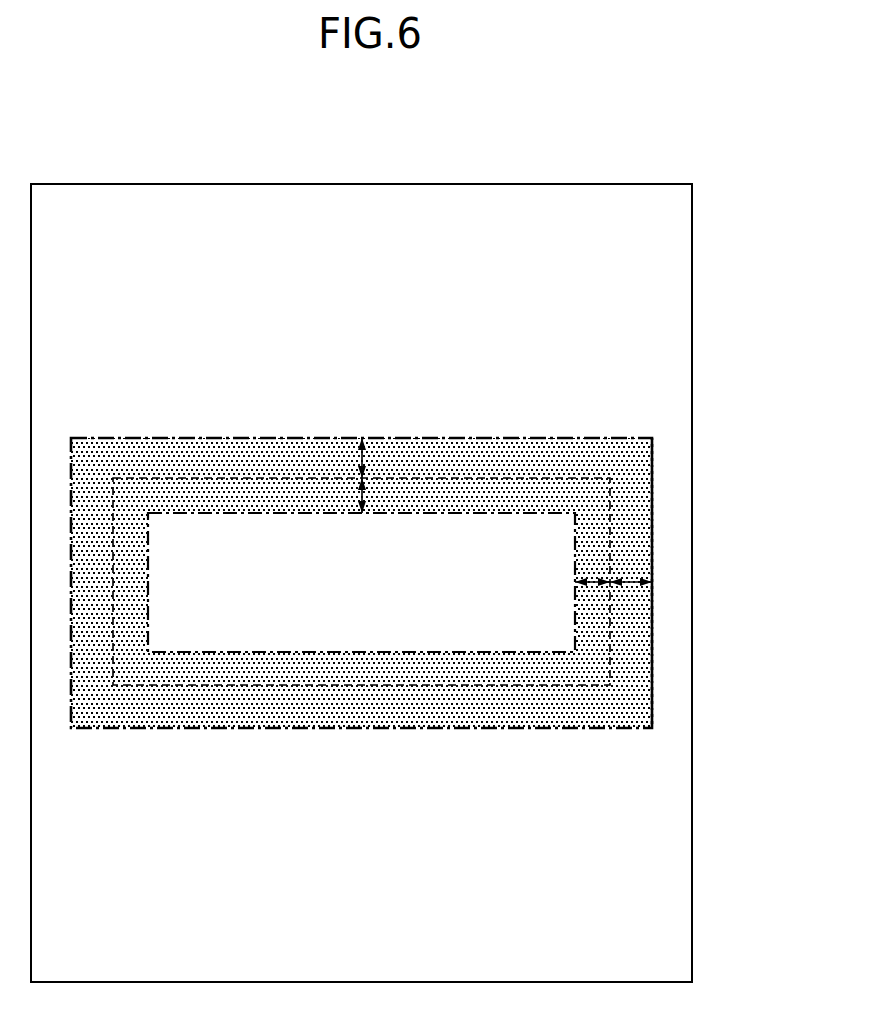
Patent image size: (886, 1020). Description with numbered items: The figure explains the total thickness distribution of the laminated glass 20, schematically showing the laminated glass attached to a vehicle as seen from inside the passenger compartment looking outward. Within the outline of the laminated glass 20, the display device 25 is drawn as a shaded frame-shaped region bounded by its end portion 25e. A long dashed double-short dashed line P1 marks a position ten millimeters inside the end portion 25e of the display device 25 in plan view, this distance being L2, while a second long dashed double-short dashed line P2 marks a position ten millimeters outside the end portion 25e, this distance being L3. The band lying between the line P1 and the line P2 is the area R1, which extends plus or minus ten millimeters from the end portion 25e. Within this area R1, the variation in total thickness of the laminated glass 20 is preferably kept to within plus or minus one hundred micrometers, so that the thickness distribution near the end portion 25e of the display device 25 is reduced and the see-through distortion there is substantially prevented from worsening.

The laminated glass 20 is at (54, 168).
The display device 25 is at (530, 487).
The end portion of the display device 25e is at (615, 652).
The long dashed double-short dashed line P1 is at (577, 527).
The long dashed double-short dashed line P2 is at (652, 458).
The distance L2 is at (484, 555).
The distance L3 is at (505, 535).
The area R1 is at (370, 653).